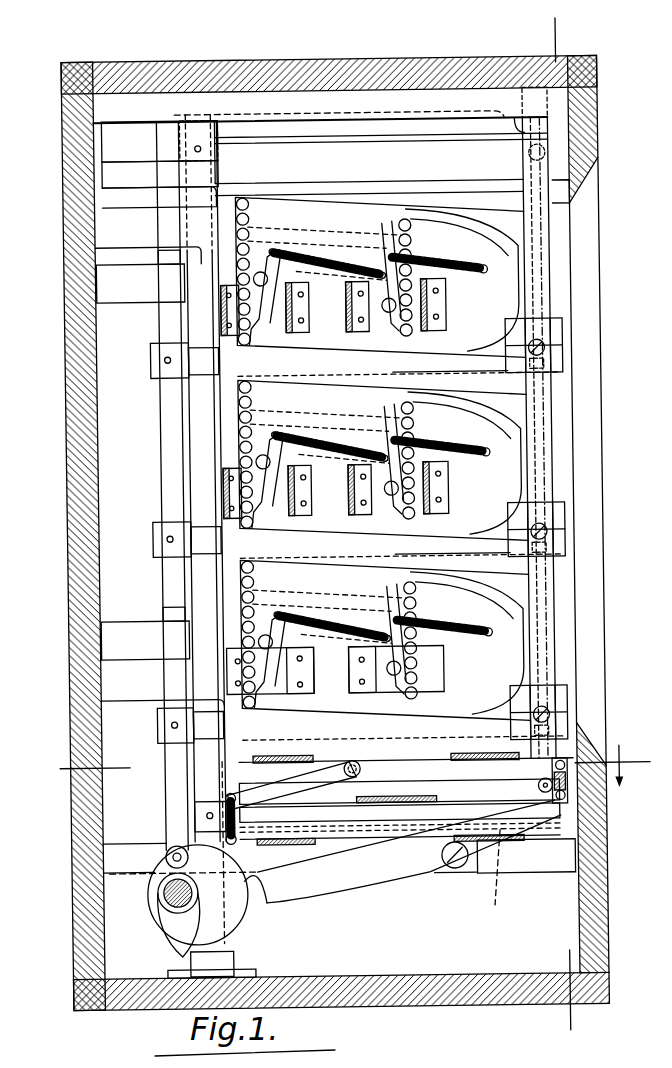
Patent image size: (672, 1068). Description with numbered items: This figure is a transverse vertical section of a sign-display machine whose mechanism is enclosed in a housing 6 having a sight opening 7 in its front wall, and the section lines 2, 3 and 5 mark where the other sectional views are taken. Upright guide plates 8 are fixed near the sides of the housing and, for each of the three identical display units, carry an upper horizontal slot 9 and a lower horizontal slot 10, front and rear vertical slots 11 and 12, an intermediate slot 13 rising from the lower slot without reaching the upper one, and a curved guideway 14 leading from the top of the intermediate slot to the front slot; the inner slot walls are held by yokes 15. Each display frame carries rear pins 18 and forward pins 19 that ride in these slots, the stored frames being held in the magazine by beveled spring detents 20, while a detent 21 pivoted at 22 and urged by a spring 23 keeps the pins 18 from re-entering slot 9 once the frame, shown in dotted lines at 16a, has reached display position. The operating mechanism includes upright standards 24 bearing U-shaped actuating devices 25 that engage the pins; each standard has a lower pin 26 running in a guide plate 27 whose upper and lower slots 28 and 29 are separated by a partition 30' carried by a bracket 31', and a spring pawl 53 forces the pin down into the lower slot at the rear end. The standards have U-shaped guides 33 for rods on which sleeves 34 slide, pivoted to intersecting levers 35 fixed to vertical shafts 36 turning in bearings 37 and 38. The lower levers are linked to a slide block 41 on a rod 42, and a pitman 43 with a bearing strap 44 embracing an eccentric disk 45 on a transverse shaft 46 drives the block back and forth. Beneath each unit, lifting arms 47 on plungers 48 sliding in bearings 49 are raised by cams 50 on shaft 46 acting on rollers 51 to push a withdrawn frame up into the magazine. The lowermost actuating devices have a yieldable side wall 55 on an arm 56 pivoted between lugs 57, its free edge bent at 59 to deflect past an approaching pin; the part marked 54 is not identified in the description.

The section line 2— 2 is at (553, 523).
The section line 3— 3 is at (342, 767).
The section line 5— 5 is at (508, 527).
The housing 6 is at (80, 372).
The sight opening 7 is at (576, 357).
The guide plate 8 is at (256, 188).
The upper horizontal guideway 9 is at (428, 193).
The lower horizontal guideway 10 is at (478, 322).
The front vertical guideway 11 is at (554, 254).
The rear vertical guideway 12 is at (268, 317).
The intermediate guideway 13 is at (438, 322).
The curved guideway 14 is at (490, 228).
The yoke 15 is at (327, 318).
The display frame in display position 16a is at (556, 282).
The rear pin 18 is at (613, 567).
The forward pin 19 is at (616, 715).
The spring actuated detent 20 is at (283, 310).
The detent 21 is at (382, 458).
The pivot 22 is at (392, 208).
The spring 23 is at (381, 454).
The upright standard 24 is at (555, 458).
The actuating device 25 is at (556, 680).
The pin 26 is at (566, 786).
The guide plate 27 is at (369, 771).
The upper slot 28 is at (406, 778).
The lower slot 29 is at (400, 821).
The partition 30' is at (313, 810).
The bracket 31' is at (423, 810).
The U-shaped guide 33 is at (520, 745).
The sleeve 34 is at (534, 790).
The intersecting lever 35 is at (496, 877).
The vertical shaft 36 is at (205, 311).
The bearing 37 is at (200, 958).
The bearing 38 is at (159, 165).
The slide block 41 is at (464, 878).
The rod 42 is at (546, 868).
The pitman 43 is at (348, 884).
The bearing strap 44 is at (238, 918).
The eccentric disk 45 is at (184, 853).
The transverse shaft 46 is at (160, 892).
The lifting arm 47 is at (203, 372).
The plunger 48 is at (190, 480).
The bearing 49 is at (143, 455).
The cam 50 is at (166, 944).
The roller 51 is at (160, 854).
The pawl 53 is at (272, 790).
The arm end 54 is at (500, 815).
The yieldable side wall 55 is at (548, 716).
The arm 56 is at (520, 715).
The lug 57 is at (520, 700).
The bent free edge 59 is at (548, 700).